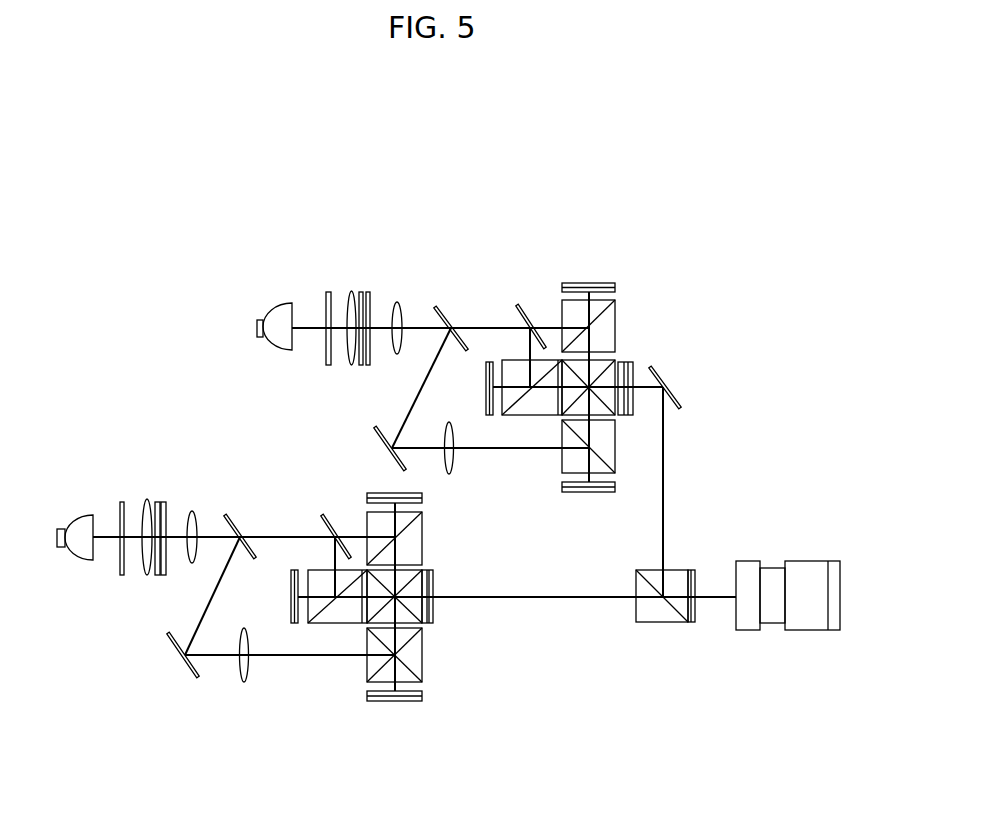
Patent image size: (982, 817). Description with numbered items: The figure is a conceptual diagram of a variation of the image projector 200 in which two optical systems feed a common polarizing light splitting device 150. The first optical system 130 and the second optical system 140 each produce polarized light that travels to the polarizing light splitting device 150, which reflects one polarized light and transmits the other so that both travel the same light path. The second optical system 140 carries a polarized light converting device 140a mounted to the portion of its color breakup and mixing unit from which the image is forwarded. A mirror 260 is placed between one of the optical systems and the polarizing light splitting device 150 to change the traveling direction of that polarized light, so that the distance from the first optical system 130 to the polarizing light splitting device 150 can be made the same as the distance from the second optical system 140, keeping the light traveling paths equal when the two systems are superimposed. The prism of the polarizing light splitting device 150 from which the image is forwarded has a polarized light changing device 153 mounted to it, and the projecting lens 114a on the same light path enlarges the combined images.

The projecting lens 114a is at (807, 625).
The first optical system 130 is at (226, 640).
The second optical system 140 is at (423, 335).
The polarized light converting device 140a is at (632, 362).
The polarizing light splitting device 150 is at (678, 647).
The polarized light changing device 153 is at (692, 622).
The image projector 200 is at (596, 352).
The mirror 260 is at (677, 375).